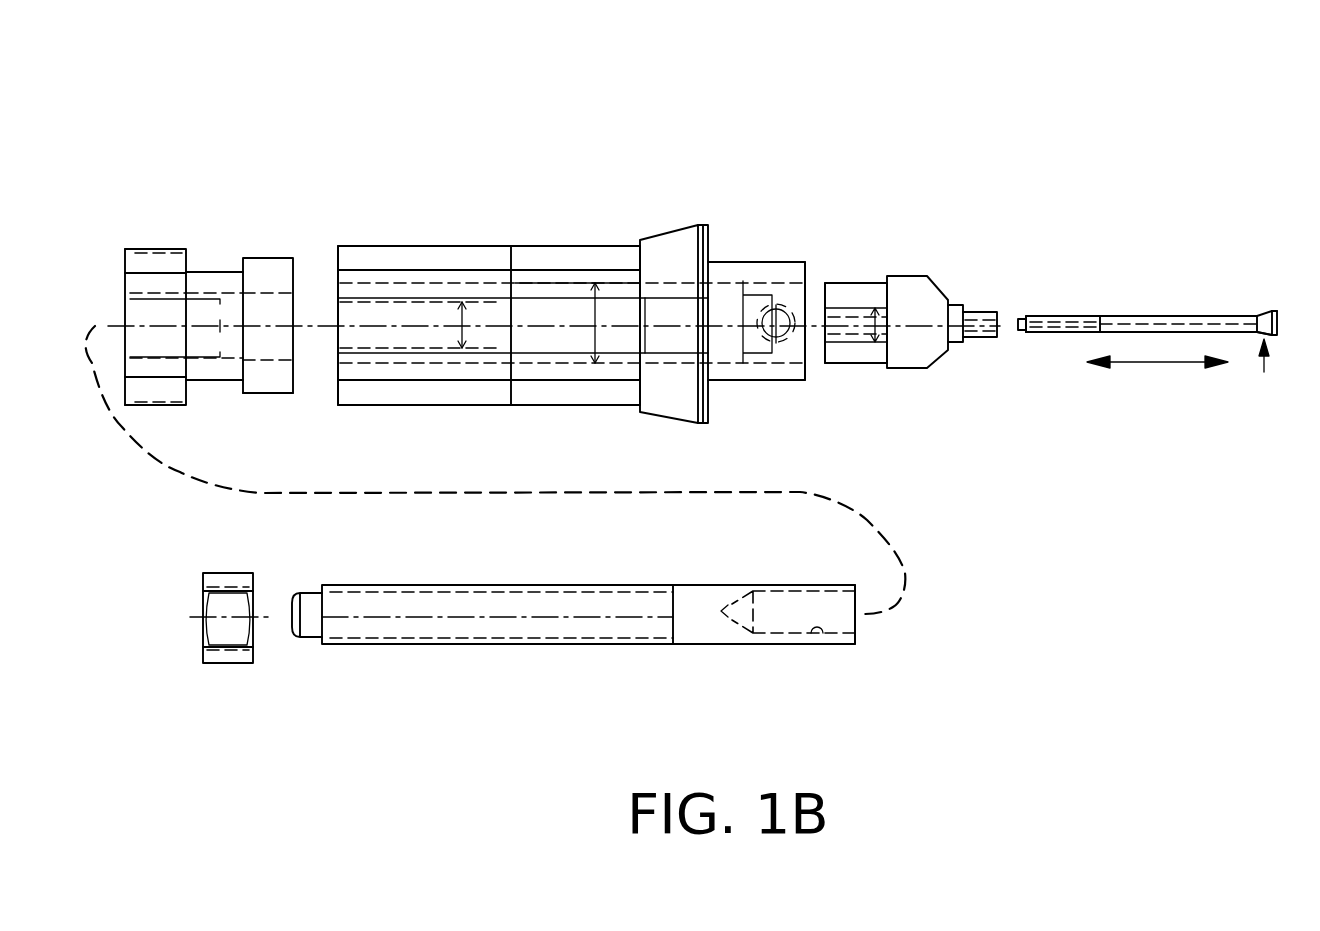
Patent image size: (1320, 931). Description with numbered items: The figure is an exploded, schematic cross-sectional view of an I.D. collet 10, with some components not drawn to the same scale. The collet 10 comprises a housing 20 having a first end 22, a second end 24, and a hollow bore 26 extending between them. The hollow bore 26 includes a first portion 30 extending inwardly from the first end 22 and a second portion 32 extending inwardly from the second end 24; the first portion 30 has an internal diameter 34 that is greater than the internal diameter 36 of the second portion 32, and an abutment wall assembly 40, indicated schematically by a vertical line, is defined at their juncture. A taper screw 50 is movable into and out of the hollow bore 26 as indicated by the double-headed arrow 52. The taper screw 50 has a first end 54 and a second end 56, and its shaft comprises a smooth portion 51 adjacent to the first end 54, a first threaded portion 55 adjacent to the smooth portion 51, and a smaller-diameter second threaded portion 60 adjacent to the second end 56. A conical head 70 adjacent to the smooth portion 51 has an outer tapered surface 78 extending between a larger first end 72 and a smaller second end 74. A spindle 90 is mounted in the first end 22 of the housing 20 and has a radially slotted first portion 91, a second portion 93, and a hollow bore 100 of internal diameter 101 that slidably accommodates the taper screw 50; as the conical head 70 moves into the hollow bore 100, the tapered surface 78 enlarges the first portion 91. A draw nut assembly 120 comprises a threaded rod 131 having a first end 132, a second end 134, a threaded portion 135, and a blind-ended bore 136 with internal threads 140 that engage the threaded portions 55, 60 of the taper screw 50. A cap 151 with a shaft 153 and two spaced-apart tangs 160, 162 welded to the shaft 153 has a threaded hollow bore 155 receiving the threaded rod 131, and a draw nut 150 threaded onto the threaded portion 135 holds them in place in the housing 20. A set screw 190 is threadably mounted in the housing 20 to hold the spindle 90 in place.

The I.D. collet 10 is at (729, 243).
The housing 20 is at (548, 246).
The first end 22 is at (808, 262).
The second end 24 is at (338, 250).
The hollow bore 26 is at (532, 282).
The first portion 30 is at (742, 283).
The second portion 32 is at (478, 290).
The internal diameter 34 is at (609, 323).
The internal diameter 36 is at (419, 325).
The abutment wall assembly 40 is at (511, 405).
The taper screw 50 is at (1082, 315).
The smooth portion 51 is at (1170, 315).
The double-headed arrow 52 is at (1145, 363).
The first end 54 is at (1256, 315).
The first threaded portion 55 is at (1065, 334).
The second end 56 is at (1026, 316).
The second threaded portion 60 is at (1021, 335).
The conical head 70 is at (1260, 373).
The first end 72 is at (1273, 337).
The second end 74 is at (1257, 336).
The outer tapered surface 78 is at (1263, 311).
The spindle 90 is at (871, 282).
The first portion 91 is at (997, 308).
The second portion 93 is at (826, 282).
The hollow bore 100 is at (848, 343).
The internal diameter 101 is at (876, 343).
The draw nut assembly 120 is at (581, 660).
The threaded rod 131 is at (645, 584).
The first end 132 is at (854, 584).
The second end 134 is at (300, 593).
The threaded portion 135 is at (470, 585).
The blind-ended bore 136 is at (797, 627).
The internal threads 140 is at (815, 634).
The draw nut 150 is at (228, 664).
The cap 151 is at (150, 264).
The shaft 153 is at (220, 272).
The hollow bore 155 is at (125, 312).
The tang 160 is at (270, 258).
The tang 162 is at (262, 393).
The set screw 190 is at (778, 340).